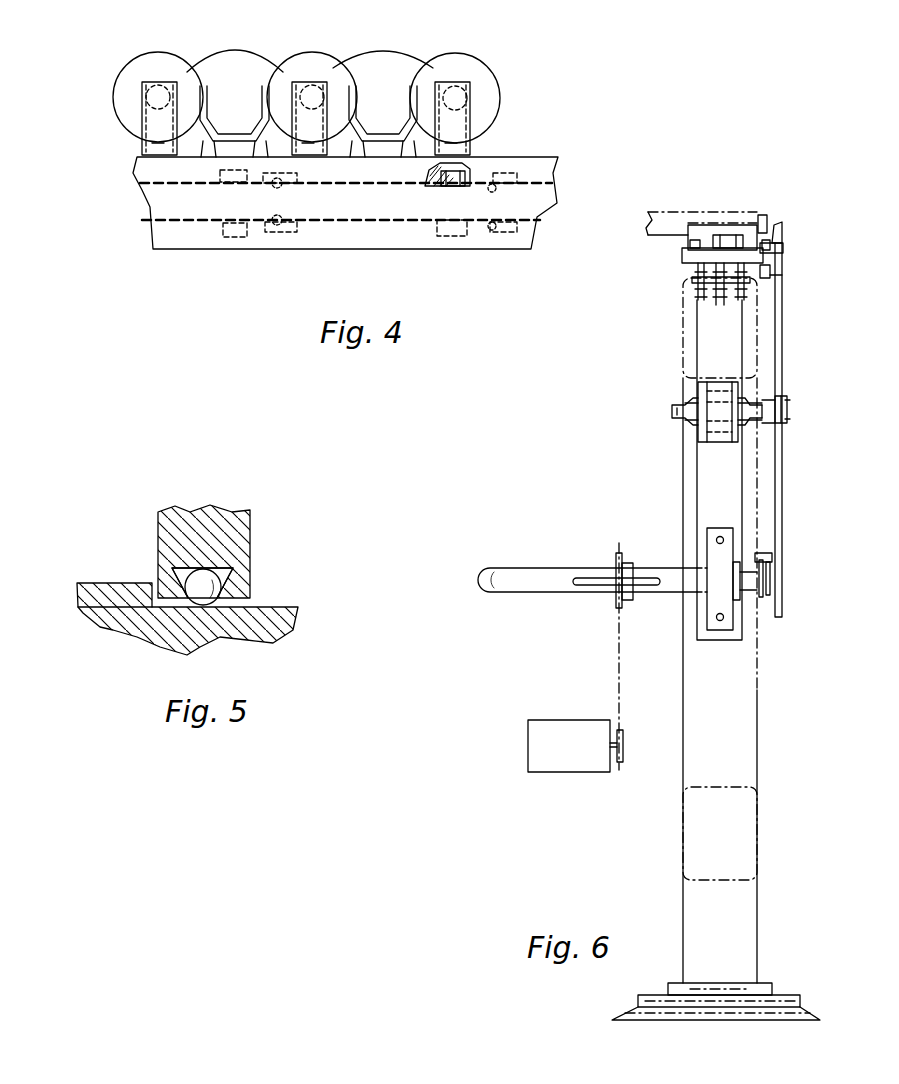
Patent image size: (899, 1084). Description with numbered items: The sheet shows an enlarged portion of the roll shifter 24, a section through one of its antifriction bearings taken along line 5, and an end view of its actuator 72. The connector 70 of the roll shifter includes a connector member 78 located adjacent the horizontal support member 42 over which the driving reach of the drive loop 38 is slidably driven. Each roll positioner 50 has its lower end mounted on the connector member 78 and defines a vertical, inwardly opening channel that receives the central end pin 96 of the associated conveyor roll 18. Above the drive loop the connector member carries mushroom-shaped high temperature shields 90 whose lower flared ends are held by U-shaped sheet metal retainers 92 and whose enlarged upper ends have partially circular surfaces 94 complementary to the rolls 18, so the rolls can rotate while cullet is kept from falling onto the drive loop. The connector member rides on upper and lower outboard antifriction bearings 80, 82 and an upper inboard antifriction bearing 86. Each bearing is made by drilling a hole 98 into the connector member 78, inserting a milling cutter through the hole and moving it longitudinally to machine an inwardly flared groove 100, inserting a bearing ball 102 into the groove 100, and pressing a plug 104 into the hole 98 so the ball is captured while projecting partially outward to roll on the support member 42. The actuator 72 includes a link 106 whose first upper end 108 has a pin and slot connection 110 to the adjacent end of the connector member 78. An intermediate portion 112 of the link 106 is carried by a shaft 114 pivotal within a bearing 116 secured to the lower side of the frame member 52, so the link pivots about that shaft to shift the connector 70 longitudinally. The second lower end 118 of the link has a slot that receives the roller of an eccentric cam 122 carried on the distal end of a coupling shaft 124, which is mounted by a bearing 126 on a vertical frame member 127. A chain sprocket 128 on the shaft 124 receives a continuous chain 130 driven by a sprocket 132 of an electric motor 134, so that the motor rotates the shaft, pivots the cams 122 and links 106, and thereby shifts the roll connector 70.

In FIG. 4, the conveyor roll 18 is at (139, 64).
In FIG. 6, the conveyor roll 18 is at (658, 212).
In FIG. 4, the central end pin 96 is at (156, 70).
In FIG. 4, the partially circular surface 94 is at (282, 72).
In FIG. 4, the high temperature shield 90 is at (243, 109).
In FIG. 4, the roll positioner 50 is at (142, 112).
In FIG. 6, the roll positioner 50 is at (755, 224).
In FIG. 4, the roll shifter 24 is at (543, 131).
In FIG. 6, the roll shifter 24 is at (768, 197).
In FIG. 4, the groove 100 is at (488, 181).
In FIG. 5, the groove 100 is at (232, 581).
In FIG. 4, the connector member 78 is at (545, 165).
In FIG. 5, the connector member 78 is at (243, 526).
In FIG. 6, the connector member 78 is at (778, 224).
In FIG. 4, the upper outboard antifriction bearing 80 is at (556, 171).
In FIG. 4, the section line 5 is at (250, 162).
In FIG. 4, the sheet metal retainer 92 is at (224, 144).
In FIG. 4, the bearing ball 102 is at (278, 220).
In FIG. 5, the bearing ball 102 is at (172, 570).
In FIG. 4, the lower antifriction bearing 82 is at (319, 208).
In FIG. 4, the hole 98 is at (447, 186).
In FIG. 4, the plug 104 is at (453, 188).
In FIG. 4, the connector 70 is at (152, 247).
In FIG. 6, the upper inboard antifriction bearing 86 is at (683, 227).
In FIG. 6, the first upper end 108 is at (762, 214).
In FIG. 6, the pin and slot connection 110 is at (781, 243).
In FIG. 6, the drive loop 38 is at (712, 248).
In FIG. 6, the support member 42 is at (700, 262).
In FIG. 6, the link 106 is at (783, 334).
In FIG. 6, the frame member 52 is at (679, 329).
In FIG. 6, the intermediate portion 112 is at (777, 362).
In FIG. 6, the shaft 114 is at (785, 400).
In FIG. 6, the bearing 116 is at (710, 426).
In FIG. 6, the actuator 72 is at (790, 495).
In FIG. 6, the vertical frame member 127 is at (683, 491).
In FIG. 6, the coupling shaft 124 is at (528, 569).
In FIG. 6, the chain sprocket 128 is at (615, 552).
In FIG. 6, the continuous chain 130 is at (622, 648).
In FIG. 6, the eccentric cam 122 is at (765, 595).
In FIG. 6, the bearing 126 is at (712, 613).
In FIG. 6, the second lower end 118 is at (764, 598).
In FIG. 6, the sprocket 132 is at (624, 741).
In FIG. 6, the electric motor 134 is at (552, 764).